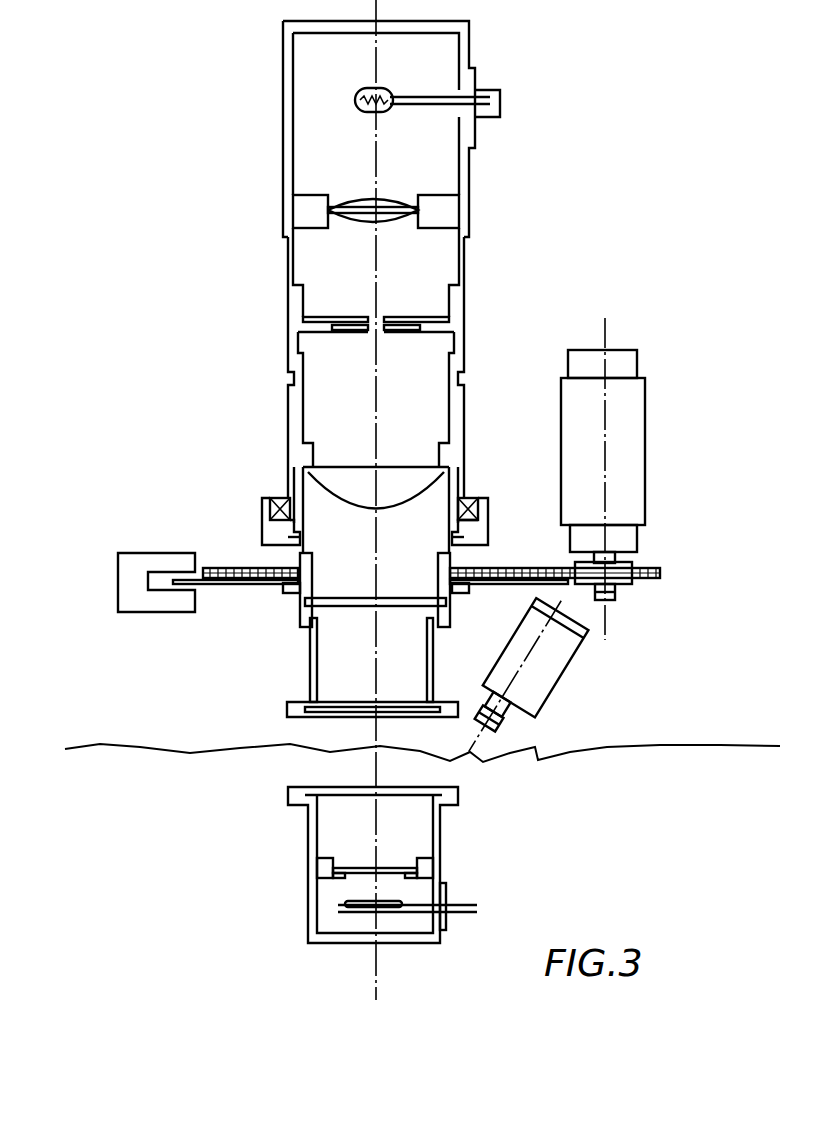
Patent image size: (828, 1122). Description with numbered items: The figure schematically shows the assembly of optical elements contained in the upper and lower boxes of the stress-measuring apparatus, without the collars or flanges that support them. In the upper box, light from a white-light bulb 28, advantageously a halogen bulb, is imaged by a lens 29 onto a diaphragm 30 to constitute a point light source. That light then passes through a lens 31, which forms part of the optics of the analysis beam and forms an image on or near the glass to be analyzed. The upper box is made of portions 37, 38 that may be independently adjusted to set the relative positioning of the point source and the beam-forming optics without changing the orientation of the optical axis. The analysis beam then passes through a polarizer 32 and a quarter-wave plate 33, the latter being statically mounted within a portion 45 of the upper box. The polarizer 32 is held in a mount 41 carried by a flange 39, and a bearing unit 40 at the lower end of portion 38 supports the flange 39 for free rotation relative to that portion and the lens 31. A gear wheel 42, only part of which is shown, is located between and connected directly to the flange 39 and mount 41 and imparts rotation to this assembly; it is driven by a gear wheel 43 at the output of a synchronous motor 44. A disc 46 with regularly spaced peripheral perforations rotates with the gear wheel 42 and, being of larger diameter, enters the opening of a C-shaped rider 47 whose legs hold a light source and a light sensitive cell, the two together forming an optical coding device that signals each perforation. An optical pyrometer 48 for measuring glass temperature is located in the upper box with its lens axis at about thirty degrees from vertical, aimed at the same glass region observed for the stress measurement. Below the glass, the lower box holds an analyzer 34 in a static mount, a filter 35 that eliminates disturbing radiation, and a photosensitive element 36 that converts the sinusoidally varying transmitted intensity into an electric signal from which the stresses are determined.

The white-light bulb 28 is at (381, 90).
The lens 29 is at (364, 197).
The diaphragm 30 is at (380, 318).
The lens 31 is at (411, 487).
The polarizer 32 is at (350, 598).
The quarter-wave plate 33 is at (343, 705).
The analyzer 34 is at (318, 790).
The filter 35 is at (363, 870).
The photosensitive element 36 is at (355, 925).
The portion of upper box 37 is at (283, 147).
The portion of upper box 38 is at (287, 413).
The flange 39 is at (262, 530).
The bearing unit 40 is at (280, 498).
The mount 41 is at (300, 593).
The gear wheel 42 is at (512, 568).
The gear wheel 43 is at (650, 583).
The synchronous motor 44 is at (627, 455).
The portion of upper box 45 is at (310, 668).
The disc 46 is at (220, 585).
The rider 47 is at (135, 565).
The optical pyrometer 48 is at (540, 675).